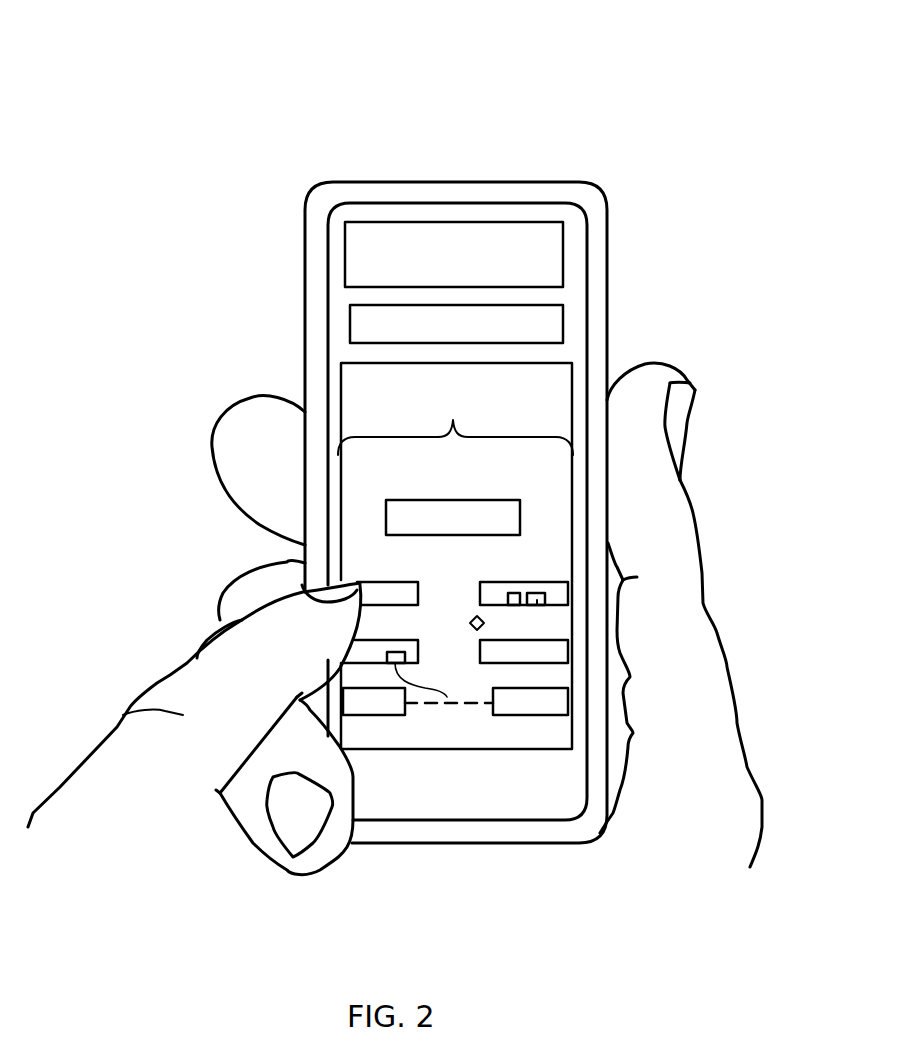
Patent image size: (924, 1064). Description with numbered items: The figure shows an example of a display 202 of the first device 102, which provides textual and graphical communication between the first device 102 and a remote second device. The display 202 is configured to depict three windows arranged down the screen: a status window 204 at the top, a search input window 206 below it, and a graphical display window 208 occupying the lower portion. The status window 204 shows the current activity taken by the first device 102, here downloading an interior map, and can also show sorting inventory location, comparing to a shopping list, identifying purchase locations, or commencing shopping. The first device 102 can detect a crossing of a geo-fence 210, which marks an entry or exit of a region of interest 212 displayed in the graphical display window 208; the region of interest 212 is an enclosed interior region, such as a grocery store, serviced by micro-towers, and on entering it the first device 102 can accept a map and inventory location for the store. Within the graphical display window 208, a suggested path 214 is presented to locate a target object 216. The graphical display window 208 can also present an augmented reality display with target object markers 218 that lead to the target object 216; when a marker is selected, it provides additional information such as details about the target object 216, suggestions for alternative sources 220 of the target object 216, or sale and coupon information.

The first device 102 is at (133, 70).
The display 202 is at (578, 245).
The status window 204 is at (357, 230).
The search input window 206 is at (363, 322).
The graphical display window 208 is at (552, 417).
The geo-fence 210 is at (487, 703).
The region of interest 212 is at (453, 420).
The suggested path 214 is at (427, 690).
The target object 216 is at (537, 607).
The target object markers 218 is at (480, 616).
The alternative sources 220 is at (515, 607).